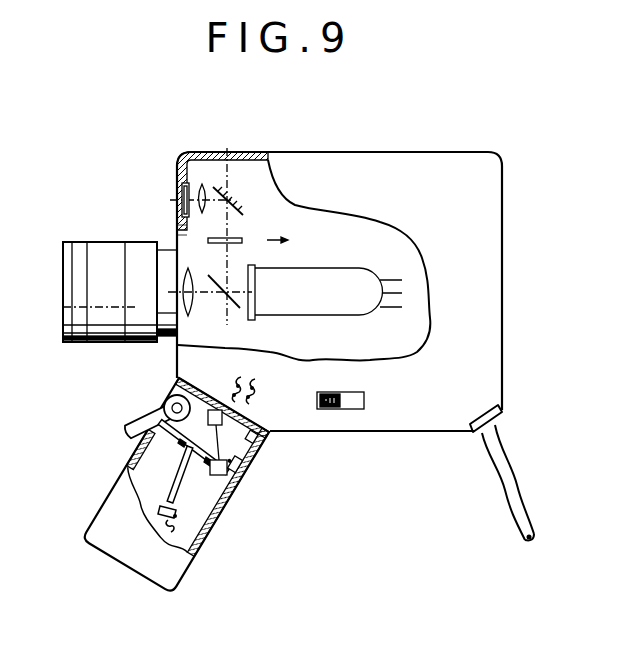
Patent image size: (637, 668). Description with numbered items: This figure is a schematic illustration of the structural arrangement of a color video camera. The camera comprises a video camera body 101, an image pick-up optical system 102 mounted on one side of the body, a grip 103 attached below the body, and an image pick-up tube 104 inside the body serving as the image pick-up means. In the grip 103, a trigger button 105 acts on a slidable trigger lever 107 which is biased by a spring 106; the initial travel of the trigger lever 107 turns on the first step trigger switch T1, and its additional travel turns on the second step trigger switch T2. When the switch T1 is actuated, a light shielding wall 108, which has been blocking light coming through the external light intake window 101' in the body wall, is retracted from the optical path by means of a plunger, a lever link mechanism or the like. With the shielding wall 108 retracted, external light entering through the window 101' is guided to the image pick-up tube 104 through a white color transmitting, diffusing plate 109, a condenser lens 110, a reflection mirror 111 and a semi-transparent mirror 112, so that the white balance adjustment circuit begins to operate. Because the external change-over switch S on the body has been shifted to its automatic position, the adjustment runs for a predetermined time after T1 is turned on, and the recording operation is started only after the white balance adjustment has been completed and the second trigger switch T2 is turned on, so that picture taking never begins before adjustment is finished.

The video camera body 101 is at (351, 321).
The external light intake window 101' is at (153, 217).
The image pick-up optical system 102 is at (102, 248).
The grip 103 is at (133, 556).
The image pick-up tube 104 is at (333, 267).
The trigger button 105 is at (123, 432).
The spring 106 is at (239, 486).
The trigger lever 107 is at (180, 453).
The light shielding wall 108 is at (232, 238).
The white color transmitting, diffusing plate 109 is at (182, 197).
The lens 110 is at (202, 181).
The reflection mirror 111 is at (229, 195).
The semi-transparent mirror 112 is at (237, 300).
The external change-over switch S is at (340, 411).
The trigger switch T1 is at (257, 434).
The trigger switch T2 is at (184, 514).